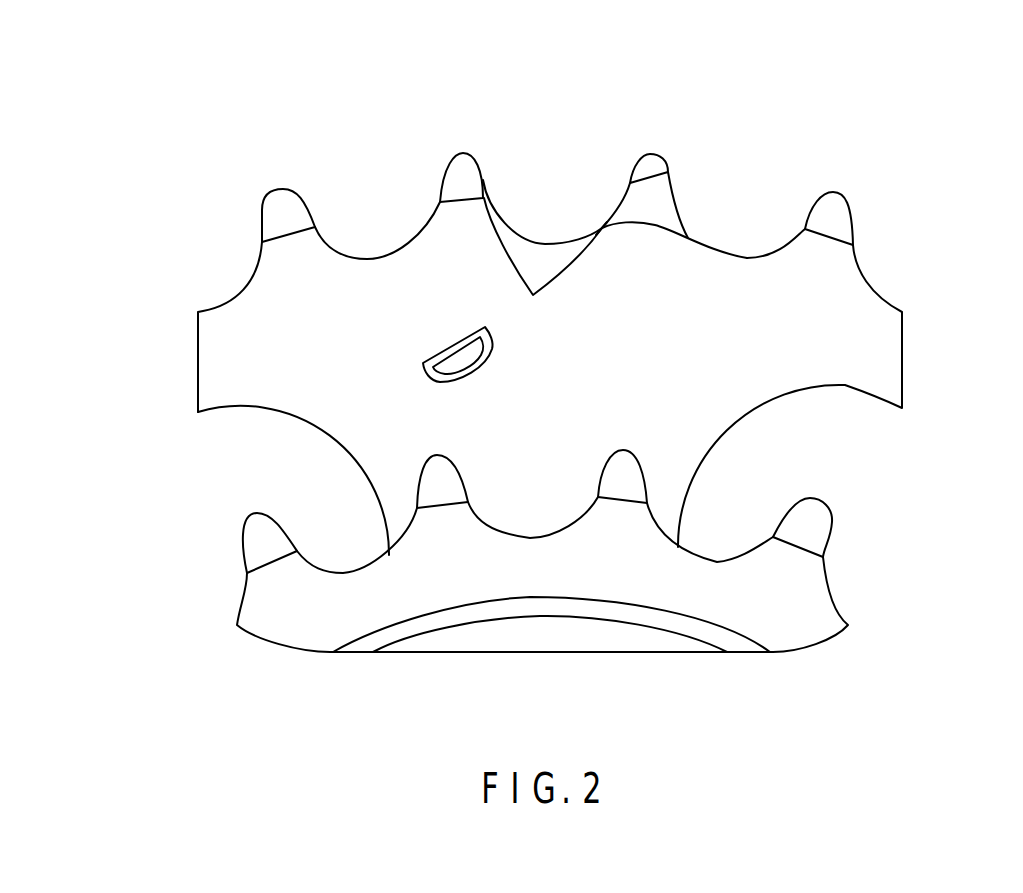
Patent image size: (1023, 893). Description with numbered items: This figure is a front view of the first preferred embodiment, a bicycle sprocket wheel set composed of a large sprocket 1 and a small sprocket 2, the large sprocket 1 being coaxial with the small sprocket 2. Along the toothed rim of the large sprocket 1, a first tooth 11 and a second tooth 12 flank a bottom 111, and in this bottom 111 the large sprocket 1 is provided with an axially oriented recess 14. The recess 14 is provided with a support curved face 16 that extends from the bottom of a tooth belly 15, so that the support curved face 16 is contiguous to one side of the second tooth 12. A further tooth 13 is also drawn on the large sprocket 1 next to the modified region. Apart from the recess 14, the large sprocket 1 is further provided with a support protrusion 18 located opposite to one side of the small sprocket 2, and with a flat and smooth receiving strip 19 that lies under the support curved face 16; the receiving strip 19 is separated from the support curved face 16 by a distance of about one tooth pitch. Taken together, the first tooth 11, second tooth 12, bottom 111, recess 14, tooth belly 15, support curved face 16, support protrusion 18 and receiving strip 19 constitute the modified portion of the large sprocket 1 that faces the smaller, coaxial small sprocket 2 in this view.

The large sprocket 1 is at (596, 288).
The small sprocket 2 is at (805, 628).
The first tooth 11 is at (465, 185).
The second tooth 12 is at (658, 203).
The tooth 13 is at (843, 215).
The axially oriented recess 14 is at (615, 221).
The bottom 111 is at (552, 242).
The tooth belly 15 is at (617, 200).
The support curved face 16 is at (600, 236).
The support protrusion 18 is at (423, 261).
The receiving strip 19 is at (457, 340).